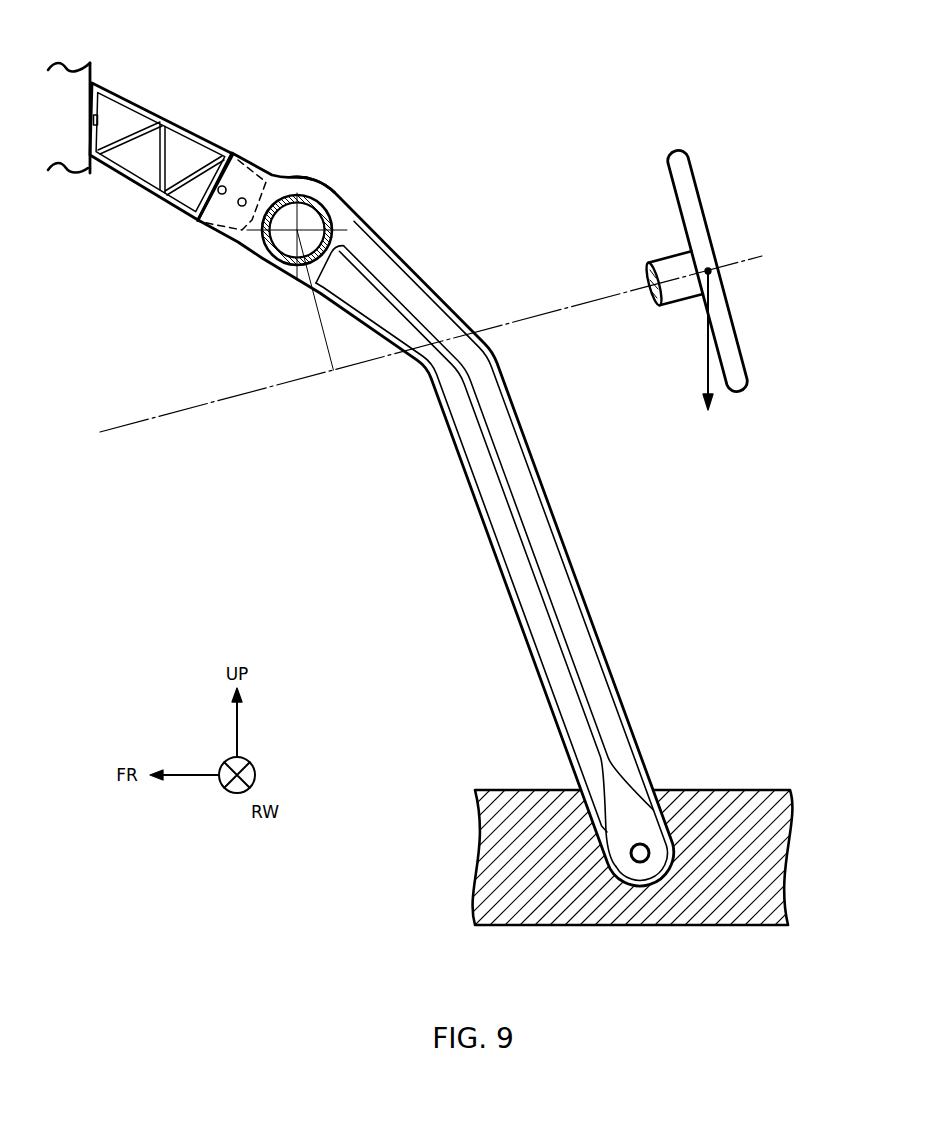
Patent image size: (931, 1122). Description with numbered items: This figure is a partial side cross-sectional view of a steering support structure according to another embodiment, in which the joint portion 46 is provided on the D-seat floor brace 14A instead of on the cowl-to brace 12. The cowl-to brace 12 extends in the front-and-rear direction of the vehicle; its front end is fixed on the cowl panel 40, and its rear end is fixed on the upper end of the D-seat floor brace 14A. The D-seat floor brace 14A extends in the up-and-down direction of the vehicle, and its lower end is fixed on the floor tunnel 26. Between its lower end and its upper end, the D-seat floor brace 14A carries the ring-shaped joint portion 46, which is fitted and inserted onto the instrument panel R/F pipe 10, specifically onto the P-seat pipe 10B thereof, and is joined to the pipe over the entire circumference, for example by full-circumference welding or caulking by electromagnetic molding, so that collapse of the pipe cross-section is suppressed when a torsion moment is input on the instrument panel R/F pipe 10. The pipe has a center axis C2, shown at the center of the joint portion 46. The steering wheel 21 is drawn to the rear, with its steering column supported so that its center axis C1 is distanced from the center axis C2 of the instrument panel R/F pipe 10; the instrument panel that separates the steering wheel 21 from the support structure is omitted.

The cowl panel 40 is at (77, 63).
The cowl-to brace 12 is at (153, 118).
The P-seat pipe 10B is at (278, 192).
The instrument panel R/F pipe 10 is at (297, 186).
The joint portion 46 is at (320, 195).
The center axis of the instrument panel R/F pipe C2 is at (272, 257).
The D-seat floor brace 14A is at (552, 527).
The floor tunnel 26 is at (520, 802).
The steering wheel 21 is at (688, 200).
The center axis of the steering column C1 is at (448, 341).